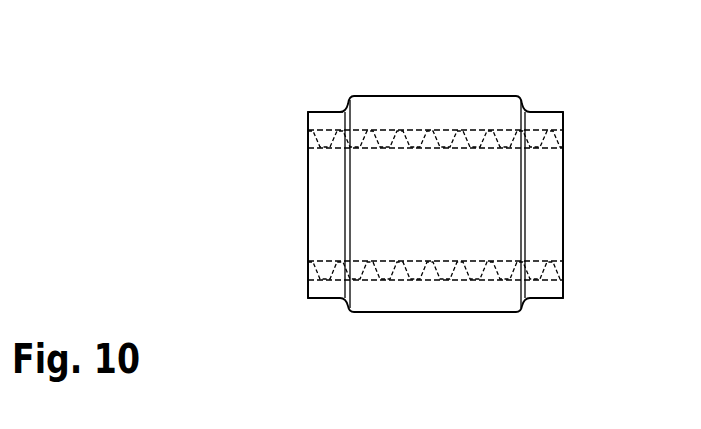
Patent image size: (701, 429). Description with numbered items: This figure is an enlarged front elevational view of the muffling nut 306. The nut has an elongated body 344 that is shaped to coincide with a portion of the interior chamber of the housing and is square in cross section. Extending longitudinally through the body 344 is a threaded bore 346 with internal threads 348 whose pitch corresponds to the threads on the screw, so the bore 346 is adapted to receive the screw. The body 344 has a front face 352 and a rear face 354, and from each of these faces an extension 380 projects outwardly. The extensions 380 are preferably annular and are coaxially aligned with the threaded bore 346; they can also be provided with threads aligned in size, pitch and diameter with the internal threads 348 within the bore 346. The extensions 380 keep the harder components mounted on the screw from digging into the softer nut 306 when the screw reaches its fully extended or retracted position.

The muffling nut 306 is at (431, 96).
The elongated body 344 is at (494, 108).
The longitudinal threaded bore 346 is at (470, 223).
The internal threads 348 is at (375, 138).
The front face 352 is at (308, 134).
The rear face 354 is at (562, 133).
The extensions 380 is at (322, 110).